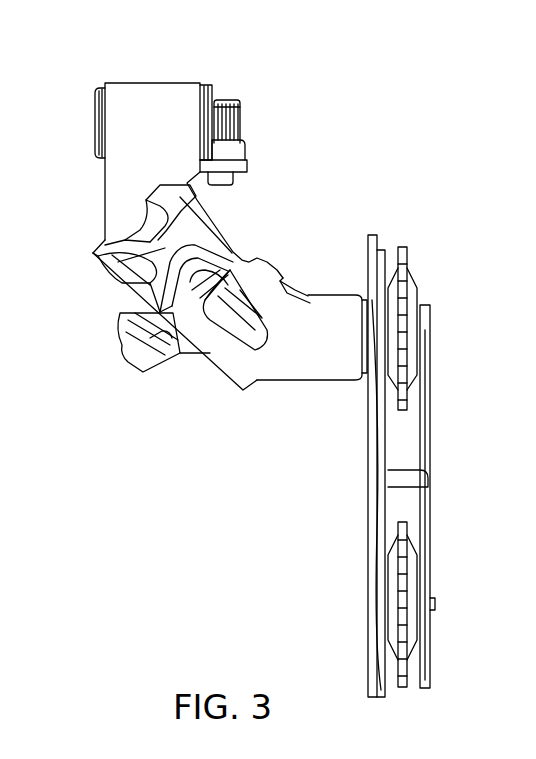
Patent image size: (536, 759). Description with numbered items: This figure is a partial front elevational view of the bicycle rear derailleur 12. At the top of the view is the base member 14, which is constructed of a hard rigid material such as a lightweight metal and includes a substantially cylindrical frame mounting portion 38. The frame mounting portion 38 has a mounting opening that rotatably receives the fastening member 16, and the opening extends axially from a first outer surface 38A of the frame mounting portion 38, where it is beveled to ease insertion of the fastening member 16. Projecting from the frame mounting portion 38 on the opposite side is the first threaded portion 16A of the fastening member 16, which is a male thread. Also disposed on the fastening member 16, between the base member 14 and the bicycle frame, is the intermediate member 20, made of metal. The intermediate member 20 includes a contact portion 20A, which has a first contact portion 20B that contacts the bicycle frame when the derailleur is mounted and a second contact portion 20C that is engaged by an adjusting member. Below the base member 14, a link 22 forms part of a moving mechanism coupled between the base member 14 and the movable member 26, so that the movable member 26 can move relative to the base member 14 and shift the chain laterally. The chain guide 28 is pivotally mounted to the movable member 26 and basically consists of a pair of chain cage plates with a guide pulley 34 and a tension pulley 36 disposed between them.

The bicycle rear derailleur 12 is at (316, 198).
The base member 14 is at (201, 210).
The fastening member 16 is at (98, 119).
The first threaded portion 16A is at (228, 103).
The intermediate member 20 is at (262, 133).
The contact portion 20A is at (245, 150).
The first contact portion 20B is at (247, 167).
The second contact portion 20C is at (226, 187).
The link 22 is at (126, 277).
The movable member 26 is at (293, 383).
The chain guide 28 is at (366, 514).
The guide pulley 34 is at (408, 258).
The tension pulley 36 is at (407, 680).
The frame mounting portion 38 is at (120, 82).
The first outer surface 38A is at (105, 178).